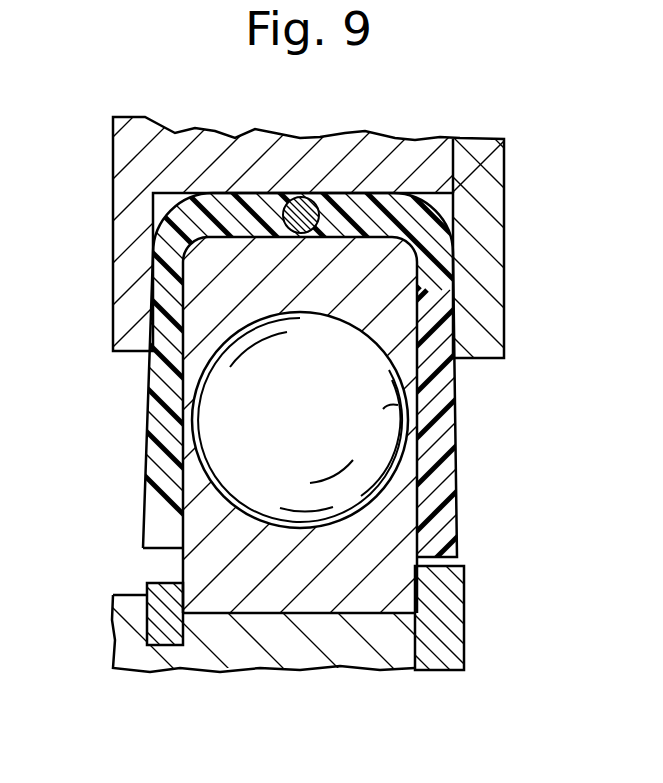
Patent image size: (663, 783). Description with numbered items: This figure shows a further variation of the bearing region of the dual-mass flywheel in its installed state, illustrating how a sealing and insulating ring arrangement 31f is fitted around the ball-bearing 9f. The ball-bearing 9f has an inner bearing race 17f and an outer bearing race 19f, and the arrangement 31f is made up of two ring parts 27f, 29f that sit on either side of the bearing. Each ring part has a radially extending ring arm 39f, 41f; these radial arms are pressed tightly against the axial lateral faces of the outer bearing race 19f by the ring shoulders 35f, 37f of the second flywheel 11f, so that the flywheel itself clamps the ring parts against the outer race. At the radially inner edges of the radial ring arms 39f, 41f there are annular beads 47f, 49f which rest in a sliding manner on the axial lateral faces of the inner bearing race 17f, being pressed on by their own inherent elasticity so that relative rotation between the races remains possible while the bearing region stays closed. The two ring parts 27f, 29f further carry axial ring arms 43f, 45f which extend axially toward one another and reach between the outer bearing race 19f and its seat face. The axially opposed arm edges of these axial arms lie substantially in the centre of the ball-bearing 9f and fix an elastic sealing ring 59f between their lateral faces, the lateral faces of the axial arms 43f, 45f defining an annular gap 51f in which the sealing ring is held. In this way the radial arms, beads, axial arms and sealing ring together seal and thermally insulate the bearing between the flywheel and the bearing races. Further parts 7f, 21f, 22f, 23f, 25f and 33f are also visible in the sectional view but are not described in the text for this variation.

The base plate 7f is at (240, 653).
The ball-bearing 9f is at (208, 421).
The second flywheel 11f is at (127, 152).
The inner bearing race 17f is at (385, 575).
The outer bearing race 19f is at (446, 283).
The sealing surface 21f is at (420, 412).
The bore 22f is at (333, 618).
The retaining ring 23f is at (147, 588).
The retaining ring 25f is at (447, 647).
The ring part 27f is at (148, 381).
The ring part 29f is at (443, 378).
The sealing and insulating ring arrangement 31f is at (203, 180).
The housing wall 33f is at (453, 213).
The ring shoulder 35f is at (127, 307).
The ring shoulder 37f is at (487, 233).
The radially extending ring arm 39f is at (153, 463).
The radially extending ring arm 41f is at (448, 452).
The axial ring arm 43f is at (232, 213).
The axial ring arm 45f is at (356, 218).
The annular bead 47f is at (163, 537).
The annular bead 49f is at (427, 543).
The annular gap 51f is at (303, 193).
The elastic sealing ring 59f is at (272, 193).